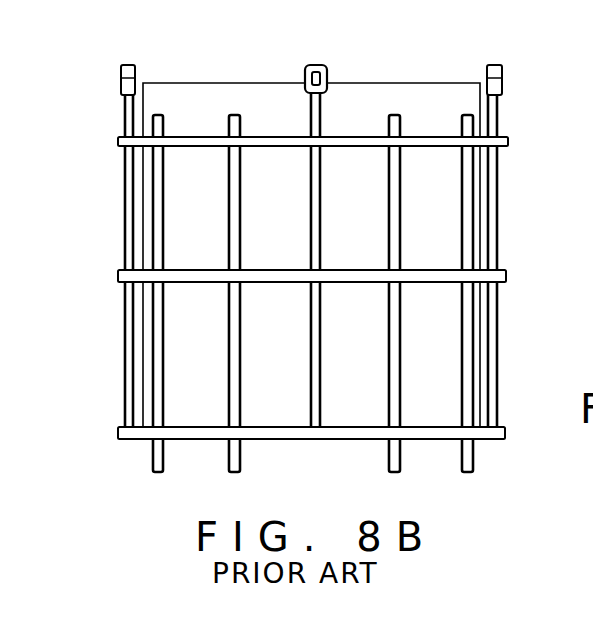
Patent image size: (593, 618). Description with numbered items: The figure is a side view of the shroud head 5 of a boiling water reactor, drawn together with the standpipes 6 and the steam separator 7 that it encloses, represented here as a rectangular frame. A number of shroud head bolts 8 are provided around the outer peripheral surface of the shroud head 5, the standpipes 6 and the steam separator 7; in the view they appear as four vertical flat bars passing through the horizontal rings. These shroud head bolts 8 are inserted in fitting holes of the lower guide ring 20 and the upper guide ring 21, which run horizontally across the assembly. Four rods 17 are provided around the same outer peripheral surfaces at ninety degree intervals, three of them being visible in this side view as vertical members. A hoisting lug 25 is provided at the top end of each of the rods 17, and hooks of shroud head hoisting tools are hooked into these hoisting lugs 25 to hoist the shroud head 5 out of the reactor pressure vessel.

The shroud head 5 is at (311, 217).
The standpipes 6 is at (311, 255).
The steam separator 7 is at (400, 83).
The shroud head bolts 8 is at (163, 347).
The rods 17 is at (125, 207).
The lower guide ring 20 is at (118, 276).
The upper guide ring 21 is at (118, 141).
The hoisting lug 25 is at (124, 65).